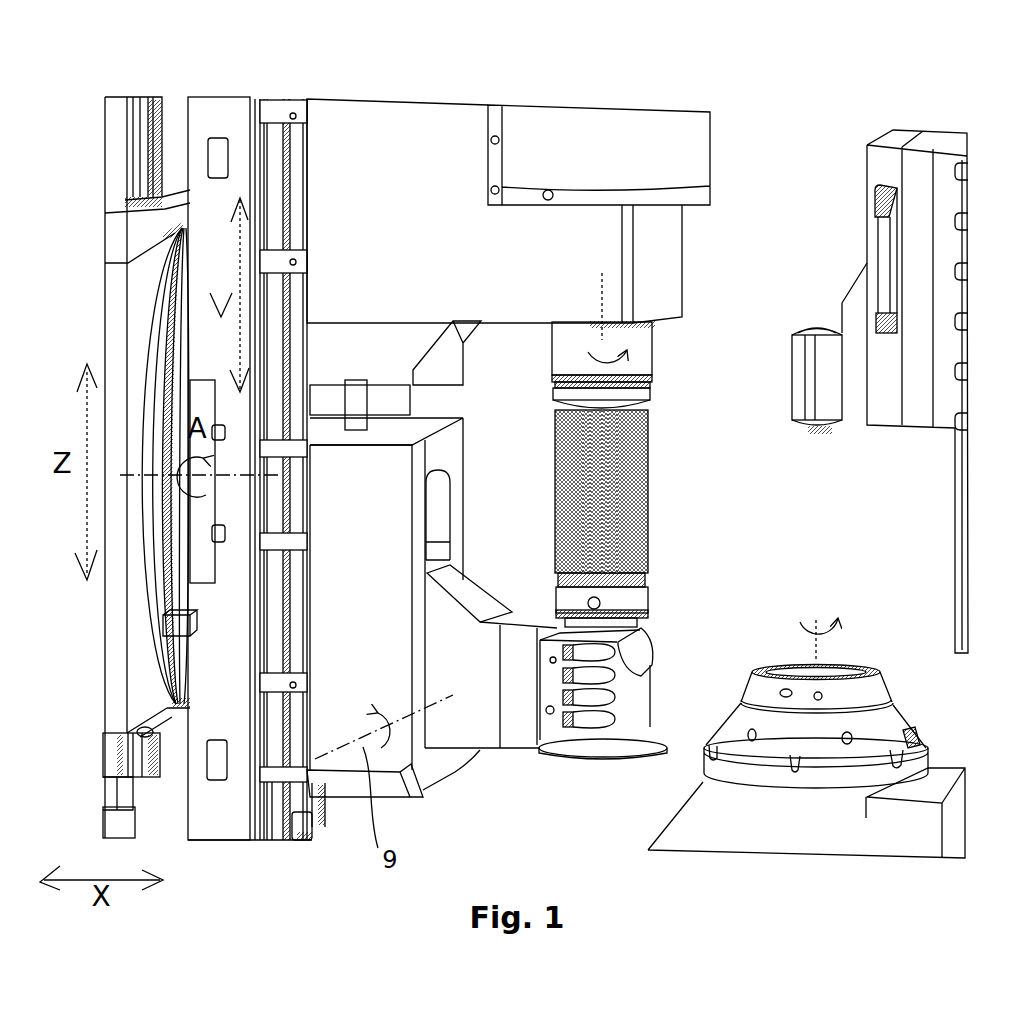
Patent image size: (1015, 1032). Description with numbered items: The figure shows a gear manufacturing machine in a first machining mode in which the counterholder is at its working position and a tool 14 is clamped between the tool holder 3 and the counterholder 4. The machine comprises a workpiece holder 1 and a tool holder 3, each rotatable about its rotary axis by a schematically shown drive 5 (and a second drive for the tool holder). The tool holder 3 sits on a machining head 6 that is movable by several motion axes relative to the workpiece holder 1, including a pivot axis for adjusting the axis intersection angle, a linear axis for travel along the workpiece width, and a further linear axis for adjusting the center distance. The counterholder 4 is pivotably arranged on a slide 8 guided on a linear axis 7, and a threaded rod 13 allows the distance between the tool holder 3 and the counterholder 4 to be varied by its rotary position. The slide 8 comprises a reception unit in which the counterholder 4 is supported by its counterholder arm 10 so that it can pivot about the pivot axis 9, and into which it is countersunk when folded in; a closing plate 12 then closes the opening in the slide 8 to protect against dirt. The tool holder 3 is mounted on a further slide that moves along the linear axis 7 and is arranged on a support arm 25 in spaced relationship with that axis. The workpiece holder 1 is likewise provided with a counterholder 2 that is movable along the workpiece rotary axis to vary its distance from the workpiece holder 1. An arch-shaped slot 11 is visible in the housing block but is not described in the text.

The workpiece holder 1 is at (835, 667).
The counterholder 2 is at (830, 412).
The tool holder 3 is at (323, 158).
The counterholder 4 is at (647, 623).
The drive 5 is at (693, 147).
The machining head 6 is at (302, 86).
The linear axis 7 is at (283, 653).
The slide 8 is at (330, 578).
The pivot axis 9 is at (437, 515).
The counterholder arm 10 is at (472, 733).
The top face 11 is at (450, 448).
The closing plate 12 is at (608, 753).
The threaded rod 13 is at (360, 404).
The tool 14 is at (655, 498).
The support arm 25 is at (452, 255).